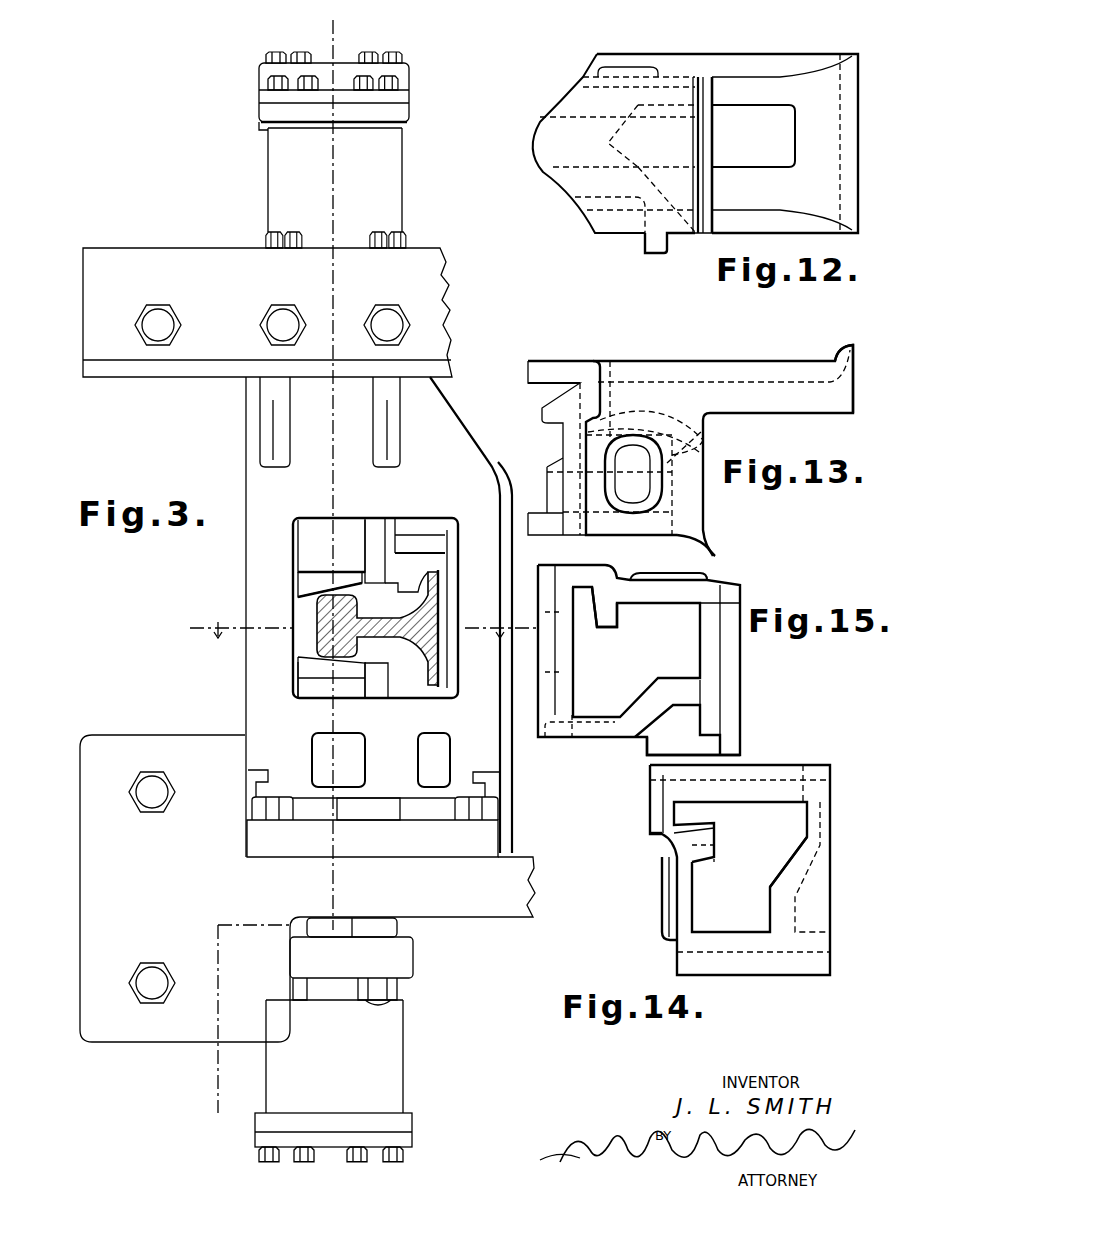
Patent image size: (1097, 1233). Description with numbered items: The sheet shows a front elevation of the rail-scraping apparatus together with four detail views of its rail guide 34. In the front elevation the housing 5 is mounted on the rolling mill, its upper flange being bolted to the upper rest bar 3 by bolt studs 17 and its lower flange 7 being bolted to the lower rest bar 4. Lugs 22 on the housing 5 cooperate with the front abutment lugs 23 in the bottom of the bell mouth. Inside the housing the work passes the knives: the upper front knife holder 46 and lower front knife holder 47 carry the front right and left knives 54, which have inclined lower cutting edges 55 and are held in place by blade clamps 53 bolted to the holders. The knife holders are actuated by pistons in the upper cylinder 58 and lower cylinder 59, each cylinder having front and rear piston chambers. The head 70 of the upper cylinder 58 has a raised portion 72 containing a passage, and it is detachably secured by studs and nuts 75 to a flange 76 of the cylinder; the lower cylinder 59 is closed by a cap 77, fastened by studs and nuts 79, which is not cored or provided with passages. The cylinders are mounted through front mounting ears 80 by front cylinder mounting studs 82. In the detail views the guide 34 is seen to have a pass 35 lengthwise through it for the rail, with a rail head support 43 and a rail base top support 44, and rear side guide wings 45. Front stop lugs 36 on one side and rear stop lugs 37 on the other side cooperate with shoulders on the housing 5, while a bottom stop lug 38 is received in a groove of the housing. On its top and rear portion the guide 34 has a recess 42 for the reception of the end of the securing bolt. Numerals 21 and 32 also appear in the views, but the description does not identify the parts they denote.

In FIG. 3, the rest bar 3 is at (228, 246).
In FIG. 3, the rest bar 4 is at (307, 888).
In FIG. 3, the housing 5 is at (326, 39).
In FIG. 3, the lower flange 7 is at (515, 825).
In FIG. 3, the bolt studs 17 is at (282, 306).
In FIG. 3, the housing 21 is at (292, 644).
In FIG. 3, the lugs 22 is at (252, 802).
In FIG. 3, the front abutment lugs 23 is at (248, 771).
In FIG. 13, the foot 32 is at (722, 548).
In FIG. 3, the guide 34 is at (436, 520).
In FIG. 12, the guide 34 is at (760, 56).
In FIG. 13, the guide 34 is at (736, 361).
In FIG. 15, the guide 34 is at (741, 724).
In FIG. 14, the guide 34 is at (657, 928).
In FIG. 12, the pass 35 is at (743, 203).
In FIG. 15, the pass 35 is at (636, 652).
In FIG. 14, the pass 35 is at (740, 867).
In FIG. 12, the front stop lugs 36 is at (840, 172).
In FIG. 13, the front stop lugs 36 is at (838, 346).
In FIG. 15, the front stop lugs 36 is at (548, 705).
In FIG. 14, the front stop lugs 36 is at (768, 768).
In FIG. 12, the rear stop lugs 37 is at (705, 236).
In FIG. 12, the bottom stop lug 38 is at (645, 247).
In FIG. 13, the bottom stop lug 38 is at (710, 510).
In FIG. 15, the bottom stop lug 38 is at (655, 752).
In FIG. 12, the recess 42 is at (640, 72).
In FIG. 13, the recess 42 is at (612, 458).
In FIG. 15, the recess 42 is at (660, 578).
In FIG. 14, the recess 42 is at (660, 882).
In FIG. 13, the rail head support 43 is at (710, 460).
In FIG. 15, the rail head support 43 is at (678, 682).
In FIG. 14, the rail head support 43 is at (764, 922).
In FIG. 3, the rail base top support 44 is at (414, 580).
In FIG. 13, the rail base top support 44 is at (670, 420).
In FIG. 15, the rail base top support 44 is at (622, 626).
In FIG. 14, the rail base top support 44 is at (712, 826).
In FIG. 12, the rear side guide wings 45 is at (614, 143).
In FIG. 13, the rear side guide wings 45 is at (562, 355).
In FIG. 3, the upper front knife holder 46 is at (373, 515).
In FIG. 3, the lower front knife holder 47 is at (380, 704).
In FIG. 3, the blade clamps 53 is at (306, 518).
In FIG. 3, the front knives 54 is at (300, 582).
In FIG. 3, the inclined lower cutting edges 55 is at (296, 605).
In FIG. 3, the upper cylinder 58 is at (336, 188).
In FIG. 3, the lower cylinder 59 is at (333, 1062).
In FIG. 3, the head of the upper cylinder 70 is at (404, 106).
In FIG. 3, the raised portion 72 is at (323, 62).
In FIG. 3, the studs and nuts 75 is at (374, 62).
In FIG. 3, the flange 76 is at (404, 130).
In FIG. 3, the cap for the lower cylinder 77 is at (333, 1148).
In FIG. 3, the studs and nuts 79 is at (388, 1162).
In FIG. 3, the front mounting ears 80 is at (412, 966).
In FIG. 3, the front cylinder mounting studs 82 is at (402, 936).